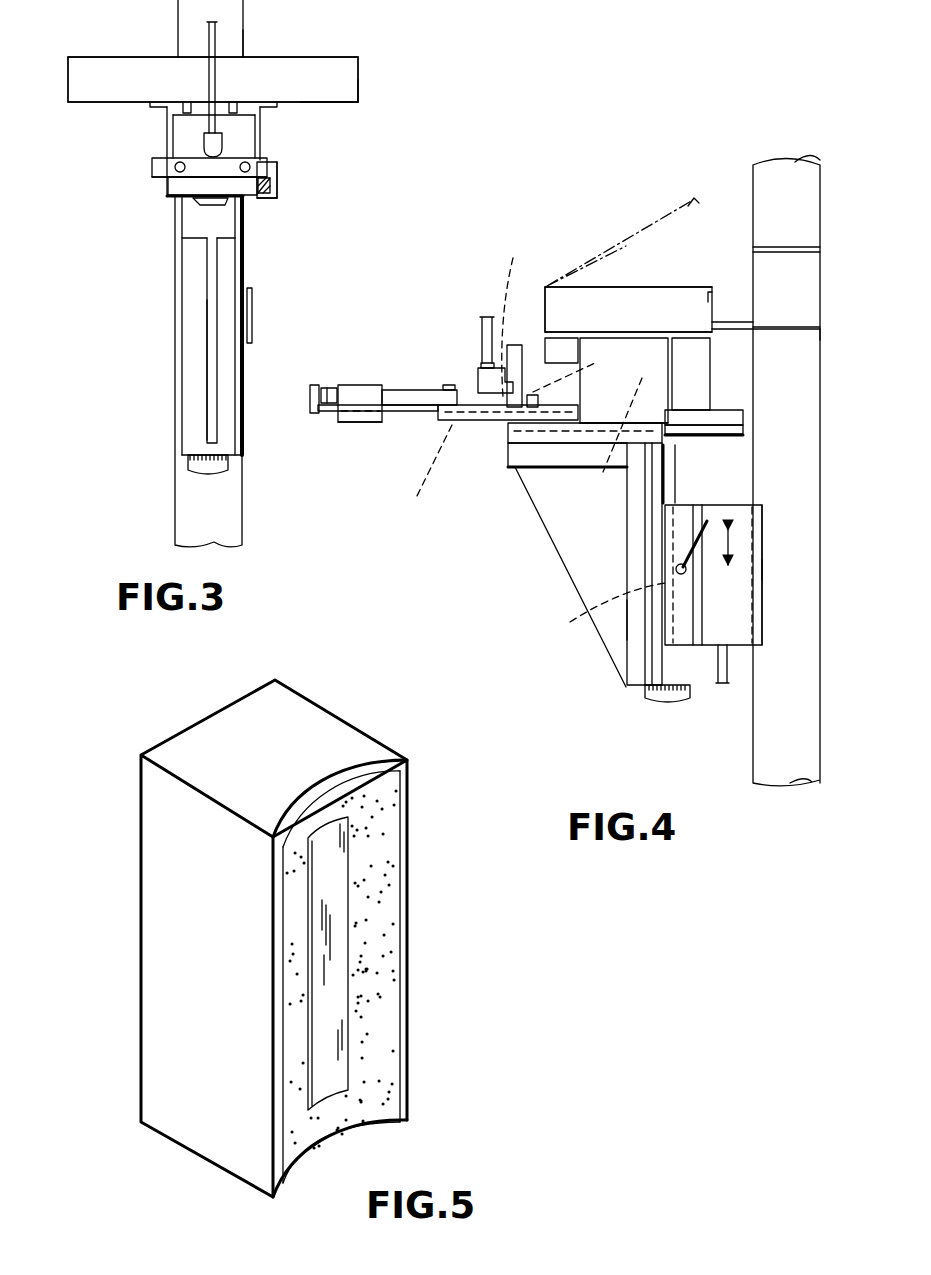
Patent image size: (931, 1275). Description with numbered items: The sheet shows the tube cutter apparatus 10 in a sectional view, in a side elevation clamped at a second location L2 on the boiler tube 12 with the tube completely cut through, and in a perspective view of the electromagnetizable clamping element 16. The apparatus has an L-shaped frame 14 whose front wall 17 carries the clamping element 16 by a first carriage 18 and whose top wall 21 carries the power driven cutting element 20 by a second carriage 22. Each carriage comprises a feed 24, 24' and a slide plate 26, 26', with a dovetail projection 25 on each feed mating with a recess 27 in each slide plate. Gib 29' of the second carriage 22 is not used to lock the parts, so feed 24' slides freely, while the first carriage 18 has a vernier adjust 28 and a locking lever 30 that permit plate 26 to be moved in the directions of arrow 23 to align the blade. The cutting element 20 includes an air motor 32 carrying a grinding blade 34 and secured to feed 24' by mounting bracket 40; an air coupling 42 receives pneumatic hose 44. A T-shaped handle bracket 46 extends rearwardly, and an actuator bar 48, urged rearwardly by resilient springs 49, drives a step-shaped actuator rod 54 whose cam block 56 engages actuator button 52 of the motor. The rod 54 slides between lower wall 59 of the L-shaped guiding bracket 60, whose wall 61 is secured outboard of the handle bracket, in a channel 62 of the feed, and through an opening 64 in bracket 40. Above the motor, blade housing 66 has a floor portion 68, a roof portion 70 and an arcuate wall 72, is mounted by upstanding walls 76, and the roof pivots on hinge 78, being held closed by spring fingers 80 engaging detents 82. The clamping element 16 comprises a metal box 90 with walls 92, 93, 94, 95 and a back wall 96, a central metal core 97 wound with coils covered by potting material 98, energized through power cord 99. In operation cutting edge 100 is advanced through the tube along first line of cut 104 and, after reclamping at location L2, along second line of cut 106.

In FIG. 3, the tube cutter apparatus 10 is at (456, 42).
In FIG. 4, the tube cutter apparatus 10 is at (521, 582).
In FIG. 3, the boiler tube 12 is at (232, 525).
In FIG. 4, the boiler tube 12 is at (784, 168).
In FIG. 3, the L-shaped frame 14 is at (193, 290).
In FIG. 4, the L-shaped frame 14 is at (586, 576).
In FIG. 4, the electromagnetizable clamping element 16 is at (740, 620).
In FIG. 5, the electromagnetizable clamping element 16 is at (385, 675).
In FIG. 3, the front wall 17 is at (193, 372).
In FIG. 4, the front wall 17 is at (633, 550).
In FIG. 4, the first carriage 18 is at (596, 628).
In FIG. 3, the power driven cutting element 20 is at (372, 100).
In FIG. 4, the power driven cutting element 20 is at (700, 263).
In FIG. 3, the top wall 21 is at (212, 197).
In FIG. 4, the top wall 21 is at (543, 457).
In FIG. 3, the second carriage 22 is at (248, 212).
In FIG. 4, the second carriage 22 is at (506, 438).
In FIG. 4, the arrow 23 is at (735, 548).
In FIG. 4, the feed 24 is at (693, 474).
In FIG. 3, the feed 24' is at (156, 226).
In FIG. 3, the dovetail projection 25 is at (212, 198).
In FIG. 4, the dovetail projection 25 is at (677, 467).
In FIG. 4, the slide plate 26 is at (749, 550).
In FIG. 3, the slide plate 26' is at (254, 336).
In FIG. 4, the slide plate 26' is at (589, 564).
In FIG. 3, the recess 27 is at (158, 283).
In FIG. 4, the recess 27 is at (660, 604).
In FIG. 3, the vernier adjust 28 is at (190, 477).
In FIG. 4, the vernier adjust 28 is at (647, 700).
In FIG. 3, the adjustable gib 29' is at (152, 199).
In FIG. 3, the locking lever 30 is at (253, 304).
In FIG. 4, the locking lever 30 is at (707, 522).
In FIG. 4, the air motor 32 is at (560, 362).
In FIG. 4, the grinding blade 34 is at (826, 338).
In FIG. 3, the mounting bracket 40 is at (241, 127).
In FIG. 4, the mounting bracket 40 is at (512, 345).
In FIG. 3, the air coupling 42 is at (222, 146).
In FIG. 4, the air coupling 42 is at (478, 381).
In FIG. 3, the pneumatic hose 44 is at (218, 42).
In FIG. 4, the pneumatic hose 44 is at (487, 317).
In FIG. 4, the handle bracket 46 is at (383, 358).
In FIG. 4, the actuator bar 48 is at (314, 413).
In FIG. 3, the resilient springs 49 is at (151, 164).
In FIG. 4, the resilient springs 49 is at (327, 386).
In FIG. 4, the actuator button 52 is at (624, 380).
In FIG. 3, the step-shaped actuator rod 54 is at (278, 182).
In FIG. 4, the step-shaped actuator rod 54 is at (411, 421).
In FIG. 4, the cam block 56 is at (549, 364).
In FIG. 3, the lower wall 59 is at (283, 199).
In FIG. 4, the lower wall 59 is at (360, 424).
In FIG. 3, the L-shaped guiding bracket 60 is at (280, 200).
In FIG. 4, the L-shaped guiding bracket 60 is at (366, 395).
In FIG. 3, the wall 61 is at (240, 159).
In FIG. 4, the channel 62 is at (423, 479).
In FIG. 4, the opening 64 is at (525, 325).
In FIG. 3, the blade housing 66 is at (153, 55).
In FIG. 4, the blade housing 66 is at (657, 285).
In FIG. 3, the floor portion 68 is at (358, 105).
In FIG. 4, the floor portion 68 is at (697, 340).
In FIG. 3, the roof portion 70 is at (327, 57).
In FIG. 4, the roof portion 70 is at (622, 287).
In FIG. 3, the arcuate wall 72 is at (188, 89).
In FIG. 4, the arcuate wall 72 is at (579, 297).
In FIG. 3, the upstanding walls 76 is at (166, 136).
In FIG. 4, the upstanding walls 76 is at (606, 419).
In FIG. 4, the hinge 78 is at (549, 283).
In FIG. 3, the spring fingers 80 is at (72, 57).
In FIG. 4, the spring fingers 80 is at (711, 288).
In FIG. 3, the detents 82 is at (68, 60).
In FIG. 5, the metal box 90 is at (160, 946).
In FIG. 5, the wall 92 is at (284, 757).
In FIG. 5, the wall 93 is at (408, 807).
In FIG. 5, the wall 94 is at (340, 1137).
In FIG. 5, the wall 95 is at (205, 1049).
In FIG. 5, the back wall 96 is at (196, 724).
In FIG. 5, the metal core 97 is at (340, 933).
In FIG. 5, the potting material 98 is at (382, 976).
In FIG. 4, the power cord 99 is at (721, 693).
In FIG. 4, the cutting edge 100 is at (830, 323).
In FIG. 4, the first line of cut 104 is at (786, 229).
In FIG. 4, the second line of cut 106 is at (786, 292).
In FIG. 4, the second location L2 is at (779, 572).